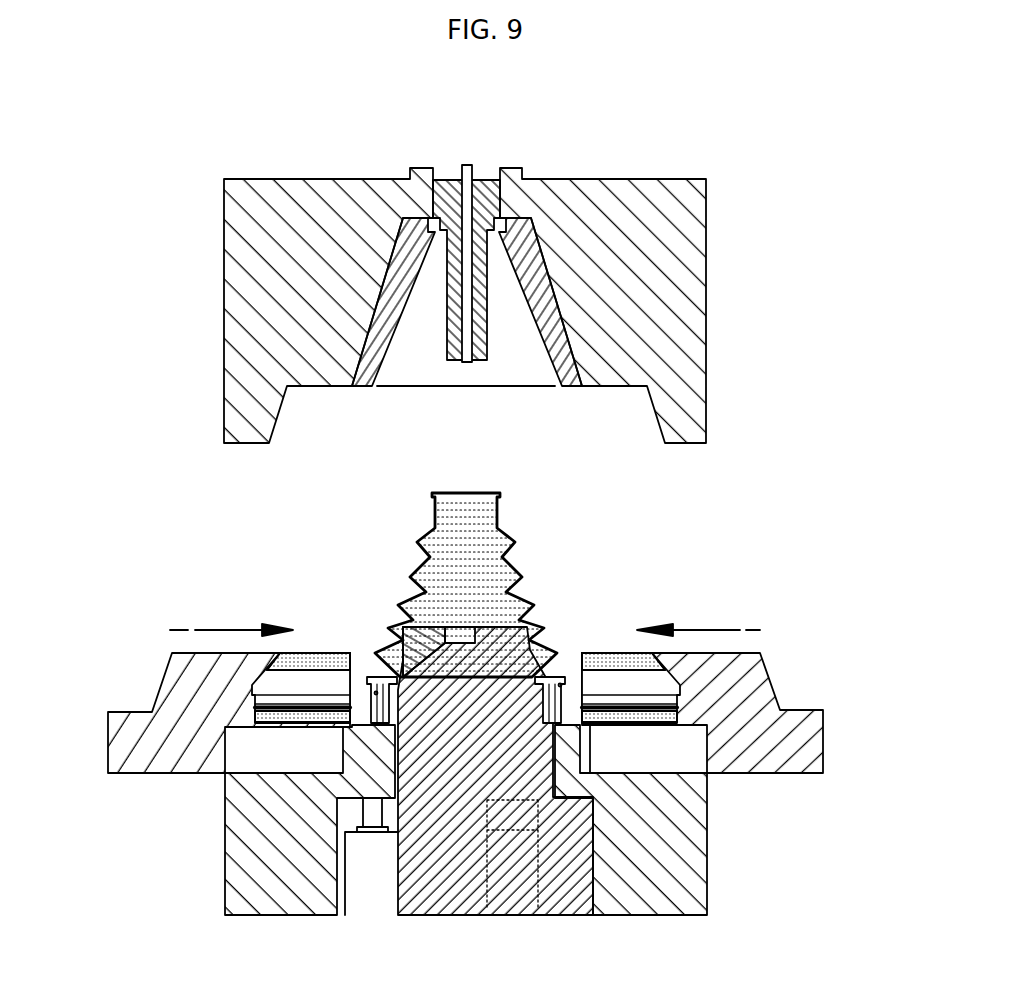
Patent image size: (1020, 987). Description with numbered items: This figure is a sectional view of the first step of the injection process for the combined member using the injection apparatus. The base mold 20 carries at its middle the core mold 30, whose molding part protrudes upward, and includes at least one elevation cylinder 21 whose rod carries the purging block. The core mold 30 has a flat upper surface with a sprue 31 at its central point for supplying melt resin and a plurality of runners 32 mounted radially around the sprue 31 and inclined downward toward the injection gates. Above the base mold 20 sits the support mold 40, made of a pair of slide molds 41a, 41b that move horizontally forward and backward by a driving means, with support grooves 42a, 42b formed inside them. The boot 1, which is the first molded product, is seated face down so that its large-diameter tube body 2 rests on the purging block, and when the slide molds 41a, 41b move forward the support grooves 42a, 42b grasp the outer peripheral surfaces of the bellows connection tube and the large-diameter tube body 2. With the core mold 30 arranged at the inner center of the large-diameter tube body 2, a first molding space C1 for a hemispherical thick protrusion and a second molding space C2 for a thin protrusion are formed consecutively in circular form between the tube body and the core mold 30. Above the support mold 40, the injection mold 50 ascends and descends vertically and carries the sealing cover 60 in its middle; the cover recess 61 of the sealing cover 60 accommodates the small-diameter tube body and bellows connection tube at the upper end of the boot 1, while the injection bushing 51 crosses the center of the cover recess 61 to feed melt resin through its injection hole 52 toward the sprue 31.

The injection mold 50 is at (708, 165).
The injection bushing 51 is at (410, 177).
The injection hole 52 is at (470, 178).
The sealing cover 60 is at (400, 210).
The cover recess 61 is at (409, 372).
The boot 1 is at (542, 525).
The core mold 30 is at (505, 600).
The sprue 31 is at (458, 632).
The runners 32 is at (403, 650).
The support mold 40 is at (483, 691).
The slide mold 41a is at (766, 687).
The slide mold 41b is at (178, 683).
The support groove 42a is at (618, 672).
The support groove 42b is at (308, 680).
The large-diameter tube body 2 is at (353, 722).
The base mold 20 is at (722, 835).
The elevation cylinder 21 is at (390, 877).
The first molding space C1 is at (376, 693).
The second molding space C2 is at (560, 685).